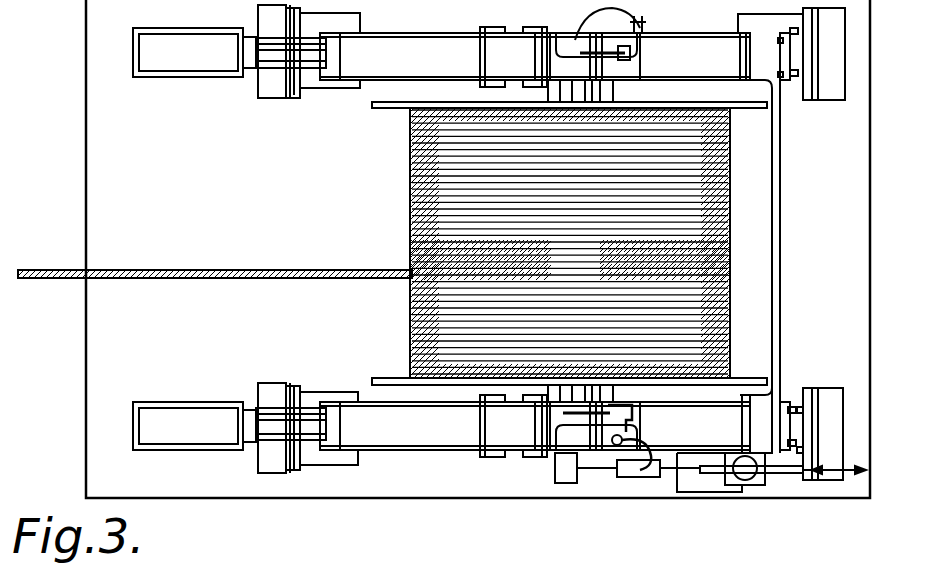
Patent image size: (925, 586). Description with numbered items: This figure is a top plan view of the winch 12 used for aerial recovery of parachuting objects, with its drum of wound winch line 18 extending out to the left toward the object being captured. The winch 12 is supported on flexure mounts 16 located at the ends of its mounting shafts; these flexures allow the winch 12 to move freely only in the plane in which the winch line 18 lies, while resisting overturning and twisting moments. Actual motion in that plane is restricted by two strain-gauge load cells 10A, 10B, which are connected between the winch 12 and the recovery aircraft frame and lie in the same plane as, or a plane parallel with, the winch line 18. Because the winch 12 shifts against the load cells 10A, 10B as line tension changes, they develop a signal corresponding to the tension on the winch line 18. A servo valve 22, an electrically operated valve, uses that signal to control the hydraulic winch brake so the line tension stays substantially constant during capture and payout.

The load cell 10A is at (296, 58).
The load cell 10B is at (298, 428).
The winch 12 is at (780, 332).
The flexure mounts 16 is at (288, 17).
The winch line 18 is at (250, 270).
The servo valve 22 is at (690, 482).